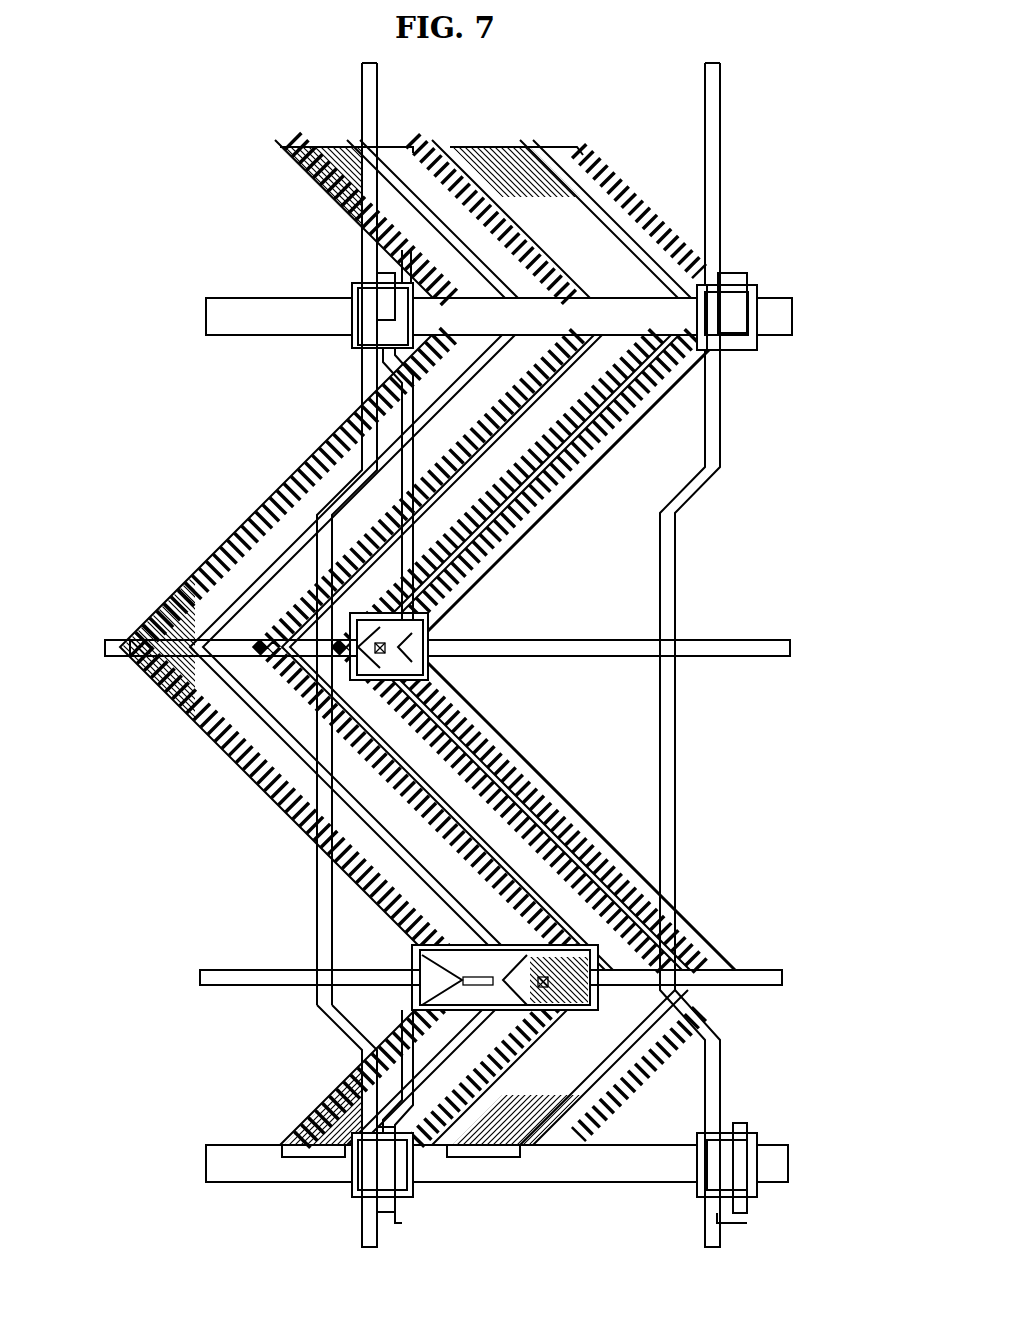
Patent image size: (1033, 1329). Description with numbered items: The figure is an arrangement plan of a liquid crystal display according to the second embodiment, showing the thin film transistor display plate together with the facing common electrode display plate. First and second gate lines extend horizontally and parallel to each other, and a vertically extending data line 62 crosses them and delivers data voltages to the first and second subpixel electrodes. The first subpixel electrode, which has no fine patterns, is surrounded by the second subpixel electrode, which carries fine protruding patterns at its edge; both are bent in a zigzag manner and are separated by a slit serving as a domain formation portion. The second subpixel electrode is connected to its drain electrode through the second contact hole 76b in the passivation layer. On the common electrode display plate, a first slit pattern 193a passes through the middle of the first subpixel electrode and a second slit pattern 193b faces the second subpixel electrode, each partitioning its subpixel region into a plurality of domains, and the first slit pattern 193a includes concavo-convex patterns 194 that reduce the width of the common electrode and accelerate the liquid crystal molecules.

The data line 62 is at (315, 788).
The second contact hole 76b is at (520, 962).
The first slit pattern 193a is at (673, 457).
The second slit pattern 193b is at (300, 527).
The concavo-convex patterns 194 is at (703, 381).